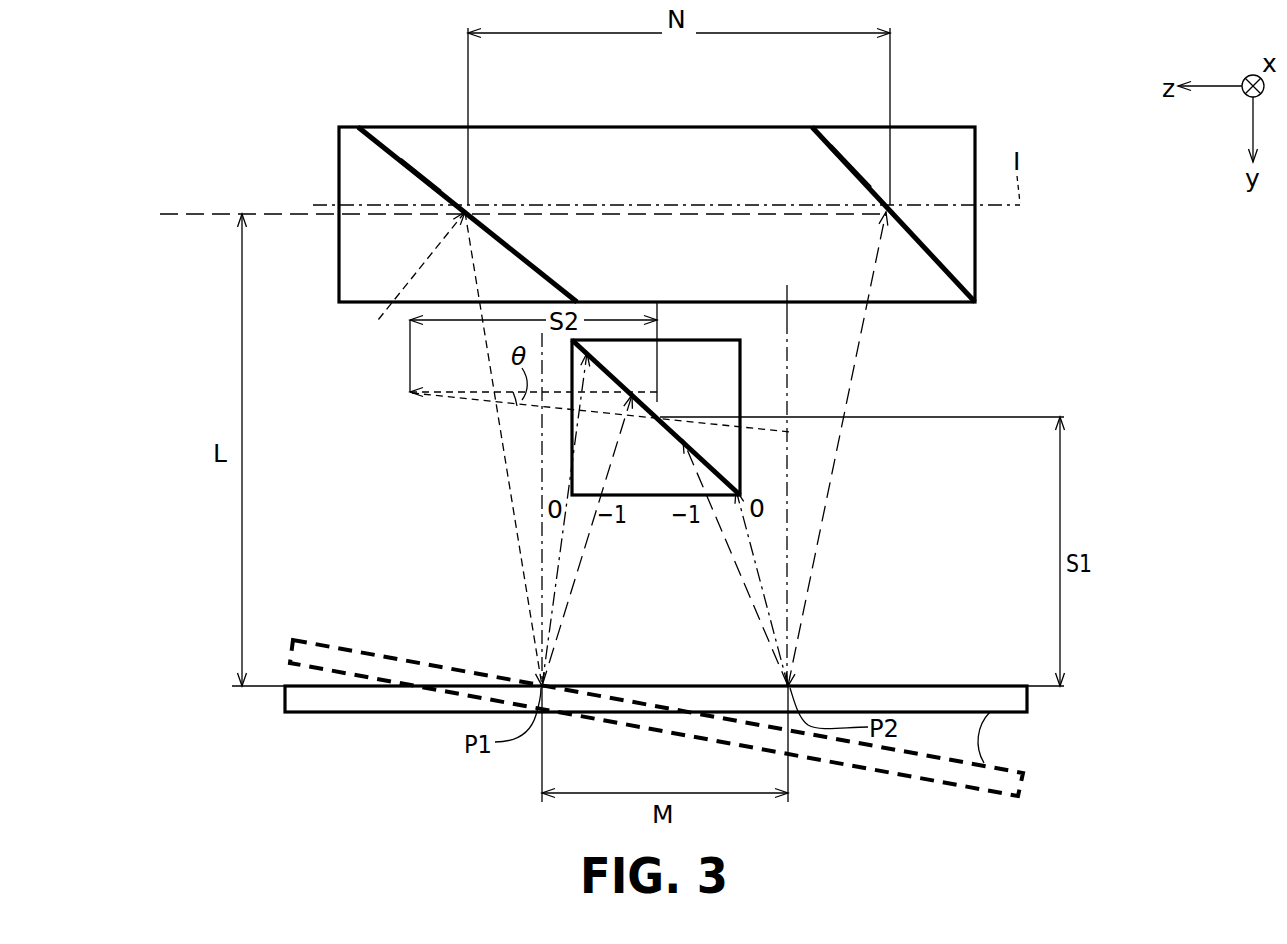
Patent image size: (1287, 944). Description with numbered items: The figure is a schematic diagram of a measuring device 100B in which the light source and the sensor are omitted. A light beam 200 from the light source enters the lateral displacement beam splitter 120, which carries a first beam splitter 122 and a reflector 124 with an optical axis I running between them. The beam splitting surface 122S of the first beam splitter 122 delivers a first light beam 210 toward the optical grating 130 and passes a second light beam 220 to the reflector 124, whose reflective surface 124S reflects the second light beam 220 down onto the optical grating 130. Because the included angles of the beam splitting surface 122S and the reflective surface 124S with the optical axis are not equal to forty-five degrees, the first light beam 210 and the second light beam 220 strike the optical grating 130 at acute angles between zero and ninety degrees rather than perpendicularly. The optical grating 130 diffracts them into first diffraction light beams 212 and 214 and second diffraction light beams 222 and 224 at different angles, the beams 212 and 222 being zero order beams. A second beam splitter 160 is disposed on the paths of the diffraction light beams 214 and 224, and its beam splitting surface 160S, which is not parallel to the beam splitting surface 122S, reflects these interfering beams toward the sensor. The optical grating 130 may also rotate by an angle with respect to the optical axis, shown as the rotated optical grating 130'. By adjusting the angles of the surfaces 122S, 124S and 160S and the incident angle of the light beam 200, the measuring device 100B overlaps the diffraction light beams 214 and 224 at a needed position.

The measuring device 100B is at (1198, 829).
The lateral displacement beam splitter 120 is at (718, 127).
The first beam splitter 122 is at (402, 155).
The beam splitting surface 122S is at (422, 178).
The reflector 124 is at (841, 154).
The reflective surface 124S is at (865, 166).
The optical grating 130 is at (690, 705).
The rotated optical grating 130' is at (697, 725).
The second beam splitter 160 is at (725, 398).
The beam splitting surface 160S is at (660, 417).
The light beam 200 is at (188, 212).
The first light beam 210 is at (505, 462).
The first diffraction light beam 212 is at (563, 532).
The first diffraction light beam 214 is at (573, 588).
The second light beam 220 is at (838, 450).
The second diffraction light beam 222 is at (760, 576).
The second diffraction light beam 224 is at (764, 629).